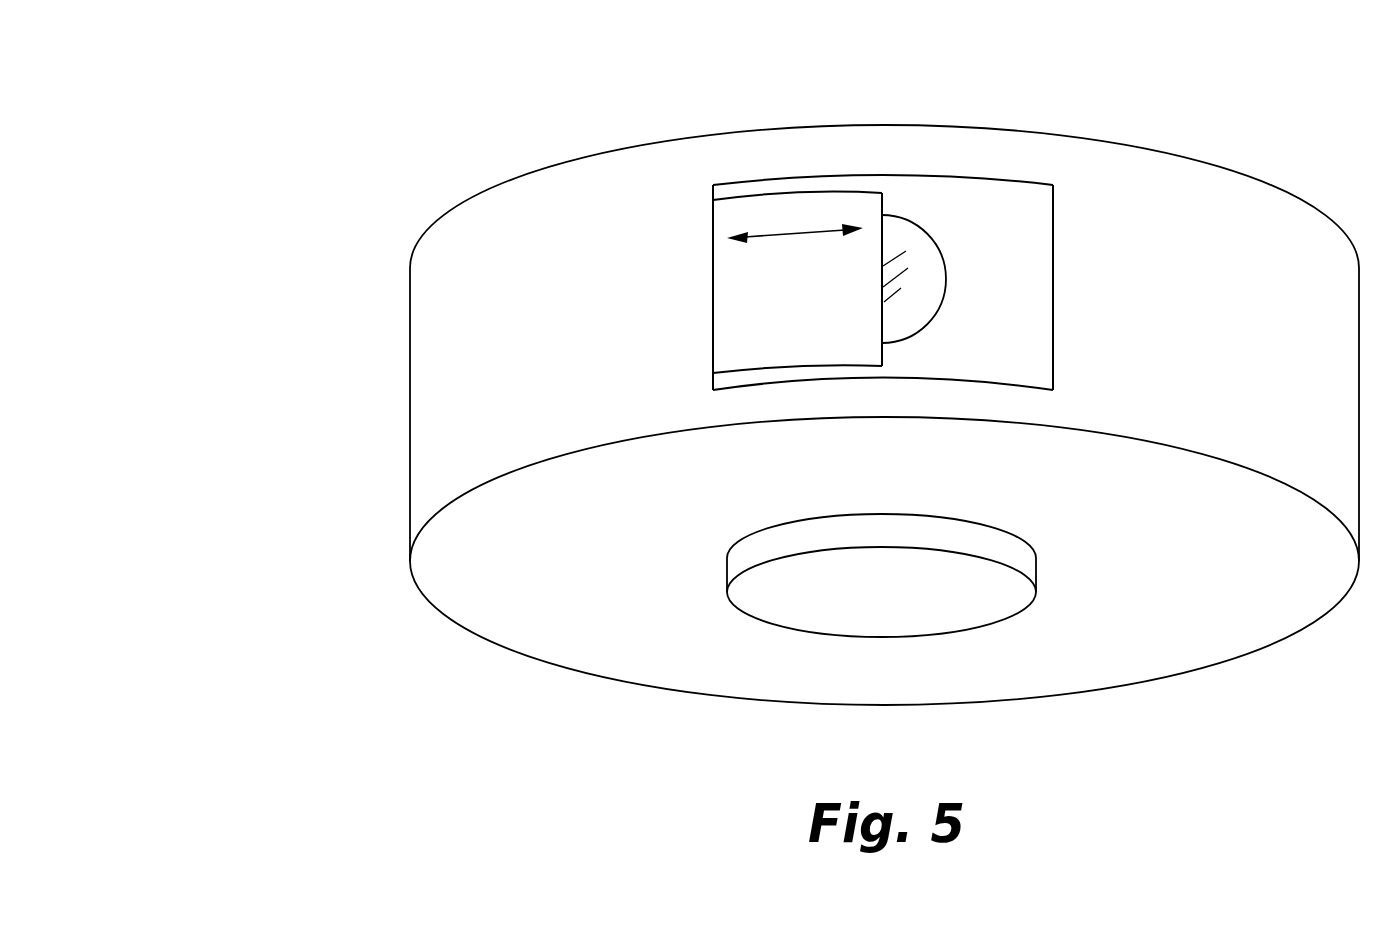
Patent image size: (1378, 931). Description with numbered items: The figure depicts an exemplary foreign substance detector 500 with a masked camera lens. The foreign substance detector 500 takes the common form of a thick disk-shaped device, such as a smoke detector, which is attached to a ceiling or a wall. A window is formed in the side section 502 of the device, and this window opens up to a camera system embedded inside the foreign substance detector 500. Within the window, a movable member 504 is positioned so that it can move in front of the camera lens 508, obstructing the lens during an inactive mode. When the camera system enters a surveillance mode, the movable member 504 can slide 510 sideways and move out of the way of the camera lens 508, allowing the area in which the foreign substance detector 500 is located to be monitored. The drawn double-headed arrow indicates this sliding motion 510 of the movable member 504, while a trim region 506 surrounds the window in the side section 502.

The foreign substance detector 500 is at (275, 92).
The side section 502 is at (566, 334).
The movable member 504 is at (807, 327).
The window opening 506 is at (1053, 257).
The camera lens 508 is at (918, 272).
The slide 510 is at (782, 233).